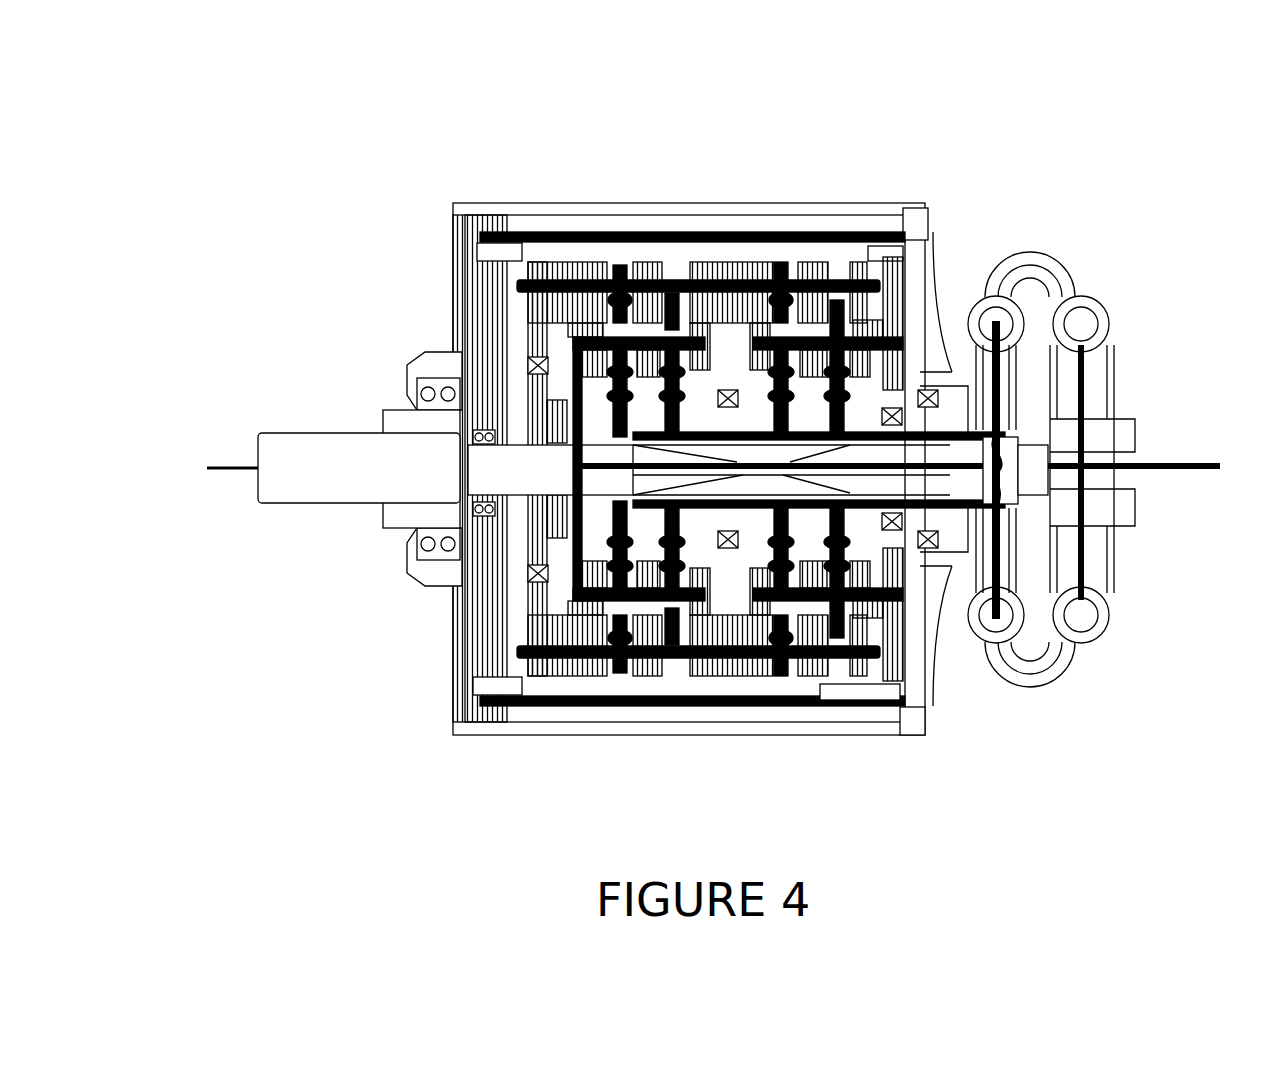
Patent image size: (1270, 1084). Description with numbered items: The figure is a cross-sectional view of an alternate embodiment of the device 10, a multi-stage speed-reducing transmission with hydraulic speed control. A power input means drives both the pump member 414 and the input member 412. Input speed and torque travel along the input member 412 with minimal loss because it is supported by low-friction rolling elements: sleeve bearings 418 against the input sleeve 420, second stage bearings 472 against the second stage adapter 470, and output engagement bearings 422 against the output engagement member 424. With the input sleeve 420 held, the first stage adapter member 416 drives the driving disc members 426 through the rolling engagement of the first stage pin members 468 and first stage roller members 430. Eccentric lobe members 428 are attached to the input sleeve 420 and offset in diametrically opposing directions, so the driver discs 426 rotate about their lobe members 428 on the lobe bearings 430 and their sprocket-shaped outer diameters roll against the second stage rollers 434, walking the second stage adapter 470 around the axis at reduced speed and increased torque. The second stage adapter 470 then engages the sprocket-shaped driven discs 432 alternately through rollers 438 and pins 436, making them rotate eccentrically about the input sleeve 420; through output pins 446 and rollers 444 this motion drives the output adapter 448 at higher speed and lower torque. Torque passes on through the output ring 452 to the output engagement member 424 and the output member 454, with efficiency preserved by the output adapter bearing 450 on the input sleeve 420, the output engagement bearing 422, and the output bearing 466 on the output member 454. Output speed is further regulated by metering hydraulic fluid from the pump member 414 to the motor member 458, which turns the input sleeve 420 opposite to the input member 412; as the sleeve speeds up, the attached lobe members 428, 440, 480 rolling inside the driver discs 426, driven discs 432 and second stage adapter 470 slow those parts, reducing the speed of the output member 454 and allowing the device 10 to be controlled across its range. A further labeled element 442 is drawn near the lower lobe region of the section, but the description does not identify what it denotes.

The device 10 is at (362, 118).
The input member 412 is at (1137, 468).
The pump member 414 is at (1092, 305).
The first stage adapter member 416 is at (540, 410).
The sleeve bearings 418 is at (819, 470).
The input sleeve 420 is at (940, 330).
The output engagement bearings 422 is at (460, 513).
The output engagement member 424 is at (487, 645).
The driving disc members 426 is at (643, 680).
The eccentric lobe members 428 is at (656, 365).
The first stage roller members 430 is at (620, 268).
The driven discs 432 is at (858, 268).
The second stage rollers 434 is at (655, 290).
The pins 436 is at (833, 613).
The rollers 438 is at (807, 287).
The lobe member 440 is at (796, 349).
The actuator 442 is at (822, 544).
The rollers 444 is at (787, 663).
The output pins 446 is at (905, 343).
The output adapter 448 is at (895, 547).
The output adapter bearing 450 is at (920, 560).
The output ring 452 is at (797, 717).
The output member 454 is at (288, 477).
The motor member 458 is at (1015, 258).
The output bearing 466 is at (422, 393).
The first stage pin members 468 is at (573, 340).
The second stage adapter 470 is at (553, 678).
The second stage bearings 472 is at (528, 573).
The lobe member 480 is at (766, 588).